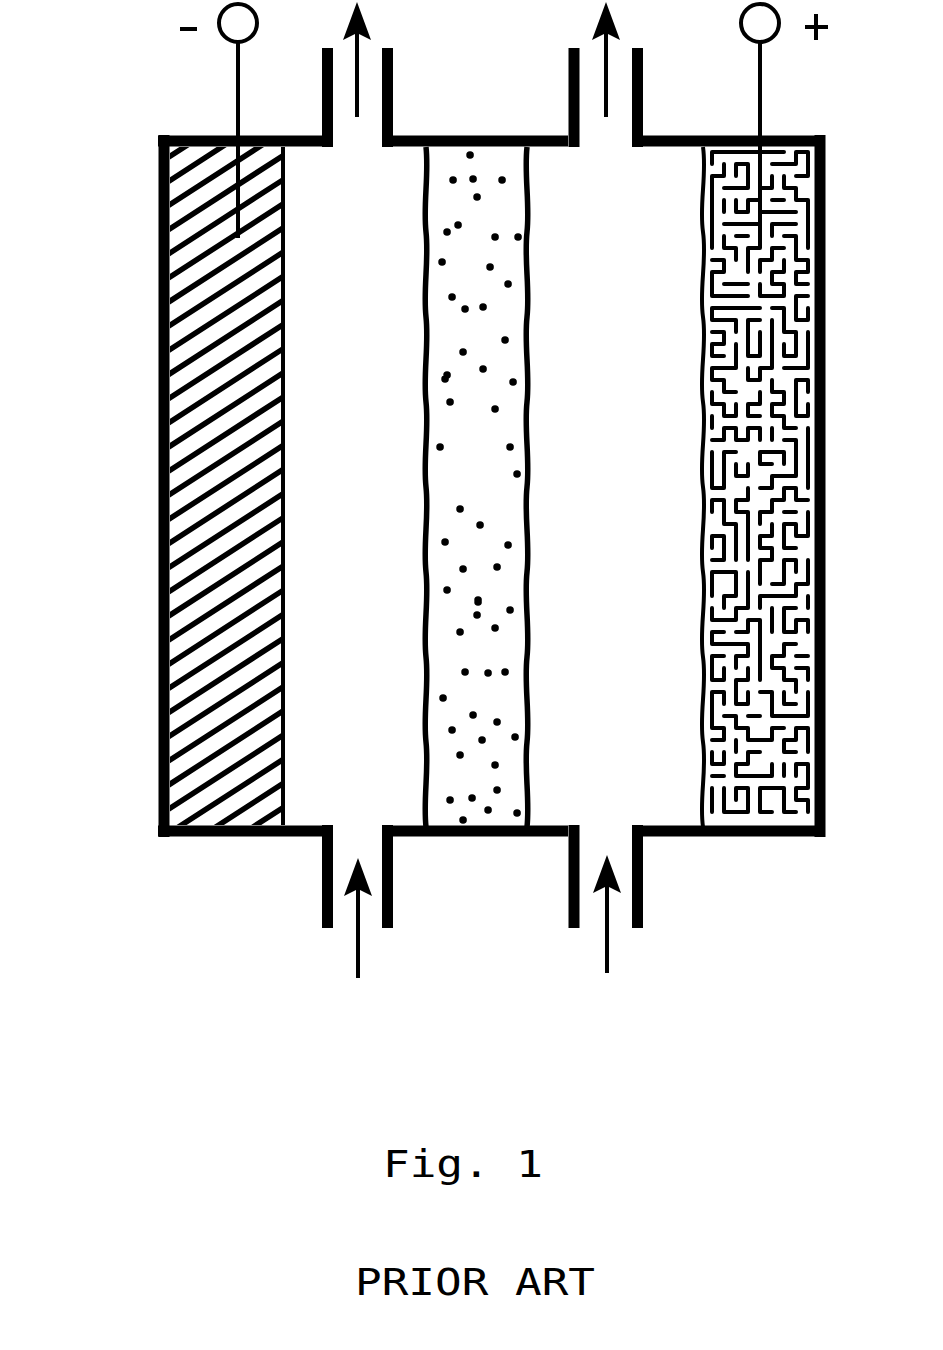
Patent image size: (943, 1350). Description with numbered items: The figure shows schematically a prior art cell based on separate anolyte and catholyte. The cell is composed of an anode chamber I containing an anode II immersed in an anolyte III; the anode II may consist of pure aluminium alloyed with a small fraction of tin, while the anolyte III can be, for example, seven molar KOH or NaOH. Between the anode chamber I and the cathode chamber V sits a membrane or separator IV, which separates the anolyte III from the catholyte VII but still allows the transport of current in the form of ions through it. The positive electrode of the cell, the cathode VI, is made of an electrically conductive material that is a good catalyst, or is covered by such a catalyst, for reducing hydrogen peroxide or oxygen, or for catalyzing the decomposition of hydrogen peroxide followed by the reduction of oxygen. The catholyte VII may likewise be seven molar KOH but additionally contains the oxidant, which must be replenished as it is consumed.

The anode chamber I is at (330, 901).
The anode II is at (200, 442).
The anolyte III is at (352, 262).
The membrane or separator IV is at (476, 487).
The cathode chamber V is at (636, 899).
The cathode VI is at (765, 415).
The catholyte VII is at (610, 258).